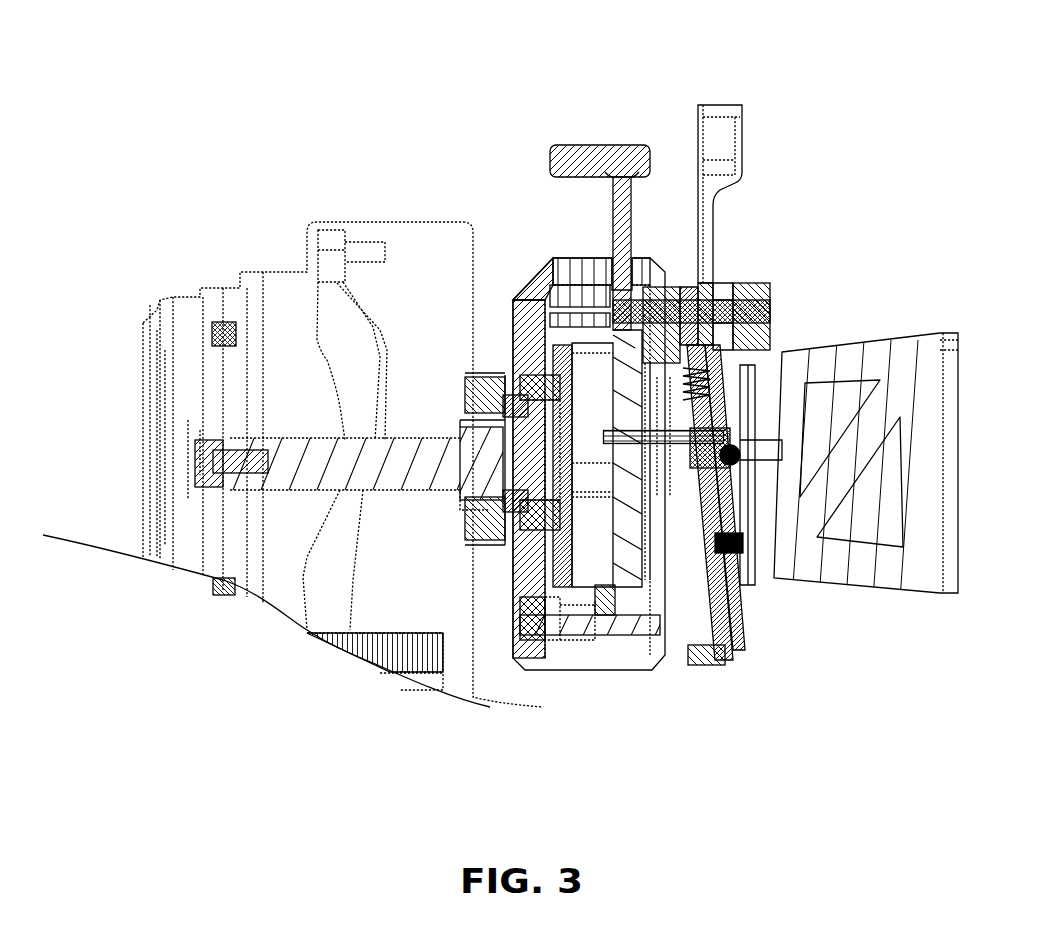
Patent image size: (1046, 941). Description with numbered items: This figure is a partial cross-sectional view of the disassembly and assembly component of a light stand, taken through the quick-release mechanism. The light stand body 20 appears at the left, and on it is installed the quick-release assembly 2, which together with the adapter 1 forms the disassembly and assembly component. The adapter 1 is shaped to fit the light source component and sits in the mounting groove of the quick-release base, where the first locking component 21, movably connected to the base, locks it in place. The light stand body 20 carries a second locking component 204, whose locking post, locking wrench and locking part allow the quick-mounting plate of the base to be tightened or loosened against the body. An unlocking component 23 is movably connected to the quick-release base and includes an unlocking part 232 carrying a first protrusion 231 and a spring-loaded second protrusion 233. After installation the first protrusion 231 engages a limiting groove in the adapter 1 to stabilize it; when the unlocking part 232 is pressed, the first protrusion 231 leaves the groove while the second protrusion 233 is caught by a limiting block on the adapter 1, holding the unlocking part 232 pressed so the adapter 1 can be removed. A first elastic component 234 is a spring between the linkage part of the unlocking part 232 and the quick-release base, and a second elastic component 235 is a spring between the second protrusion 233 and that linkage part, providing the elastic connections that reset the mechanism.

The adapter 1 is at (887, 580).
The quick-release assembly 2 is at (773, 451).
The light stand body 20 is at (502, 303).
The second locking component 204 is at (610, 193).
The first locking component 21 is at (712, 150).
The unlocking component 23 is at (797, 543).
The first protrusion 231 is at (757, 613).
The unlocking part 232 is at (700, 655).
The second protrusion 233 is at (800, 575).
The first elastic component 234 is at (705, 378).
The second elastic component 235 is at (740, 423).